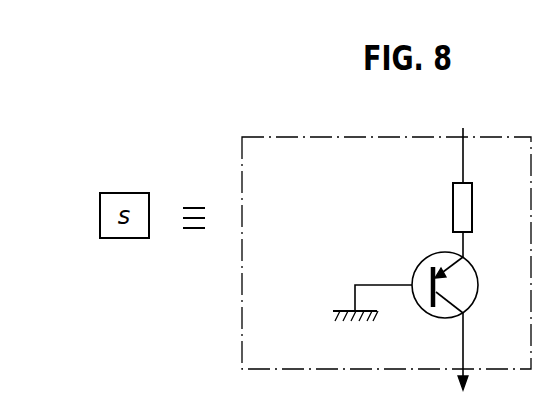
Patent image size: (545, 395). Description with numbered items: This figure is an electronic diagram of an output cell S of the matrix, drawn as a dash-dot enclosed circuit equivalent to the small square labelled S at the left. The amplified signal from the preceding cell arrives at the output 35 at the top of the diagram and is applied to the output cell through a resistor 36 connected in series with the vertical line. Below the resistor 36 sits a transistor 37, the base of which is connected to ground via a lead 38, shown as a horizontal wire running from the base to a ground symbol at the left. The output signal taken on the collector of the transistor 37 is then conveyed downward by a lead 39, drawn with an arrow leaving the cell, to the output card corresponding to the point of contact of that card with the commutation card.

The output of transistor 35 is at (464, 155).
The resistor 36 is at (464, 216).
The transistor 37 is at (473, 266).
The lead 38 is at (382, 284).
The lead 39 is at (465, 347).